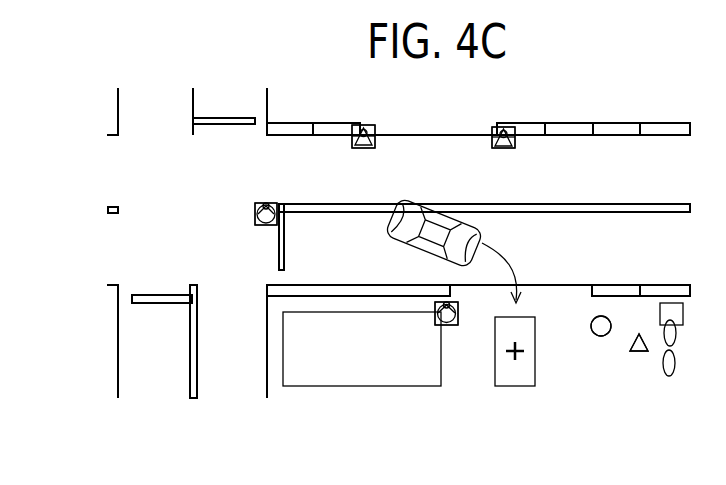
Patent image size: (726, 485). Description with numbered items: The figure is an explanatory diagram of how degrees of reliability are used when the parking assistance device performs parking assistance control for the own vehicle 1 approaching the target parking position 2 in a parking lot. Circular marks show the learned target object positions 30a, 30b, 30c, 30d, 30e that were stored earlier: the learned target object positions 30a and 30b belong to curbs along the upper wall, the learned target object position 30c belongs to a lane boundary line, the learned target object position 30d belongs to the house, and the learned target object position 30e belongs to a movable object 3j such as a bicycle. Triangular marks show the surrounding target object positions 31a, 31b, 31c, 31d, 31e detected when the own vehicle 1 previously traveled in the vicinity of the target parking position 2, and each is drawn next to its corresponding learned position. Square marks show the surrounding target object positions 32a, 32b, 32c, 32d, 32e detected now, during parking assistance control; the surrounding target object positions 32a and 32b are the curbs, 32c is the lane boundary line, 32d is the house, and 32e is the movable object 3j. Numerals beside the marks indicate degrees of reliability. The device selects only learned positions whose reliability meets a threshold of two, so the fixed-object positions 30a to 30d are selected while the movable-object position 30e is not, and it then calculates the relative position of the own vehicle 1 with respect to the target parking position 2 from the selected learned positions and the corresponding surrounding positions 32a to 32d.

The own vehicle 1 is at (478, 224).
The target parking position 2 is at (553, 390).
The movable object 3j is at (675, 340).
The learned target object position 30a is at (371, 128).
The learned target object position 30b is at (496, 128).
The learned target object position 30c is at (258, 207).
The learned target object position 30d is at (456, 320).
The learned target object position 30e is at (591, 322).
The surrounding target object position 31a is at (377, 141).
The surrounding target object position 31b is at (516, 140).
The surrounding target object position 31c is at (272, 204).
The surrounding target object position 31d is at (446, 303).
The surrounding target object position 31e is at (641, 353).
The surrounding target object position 32a is at (356, 125).
The surrounding target object position 32b is at (517, 132).
The surrounding target object position 32c is at (254, 224).
The surrounding target object position 32d is at (436, 318).
The surrounding target object position 32e is at (670, 303).